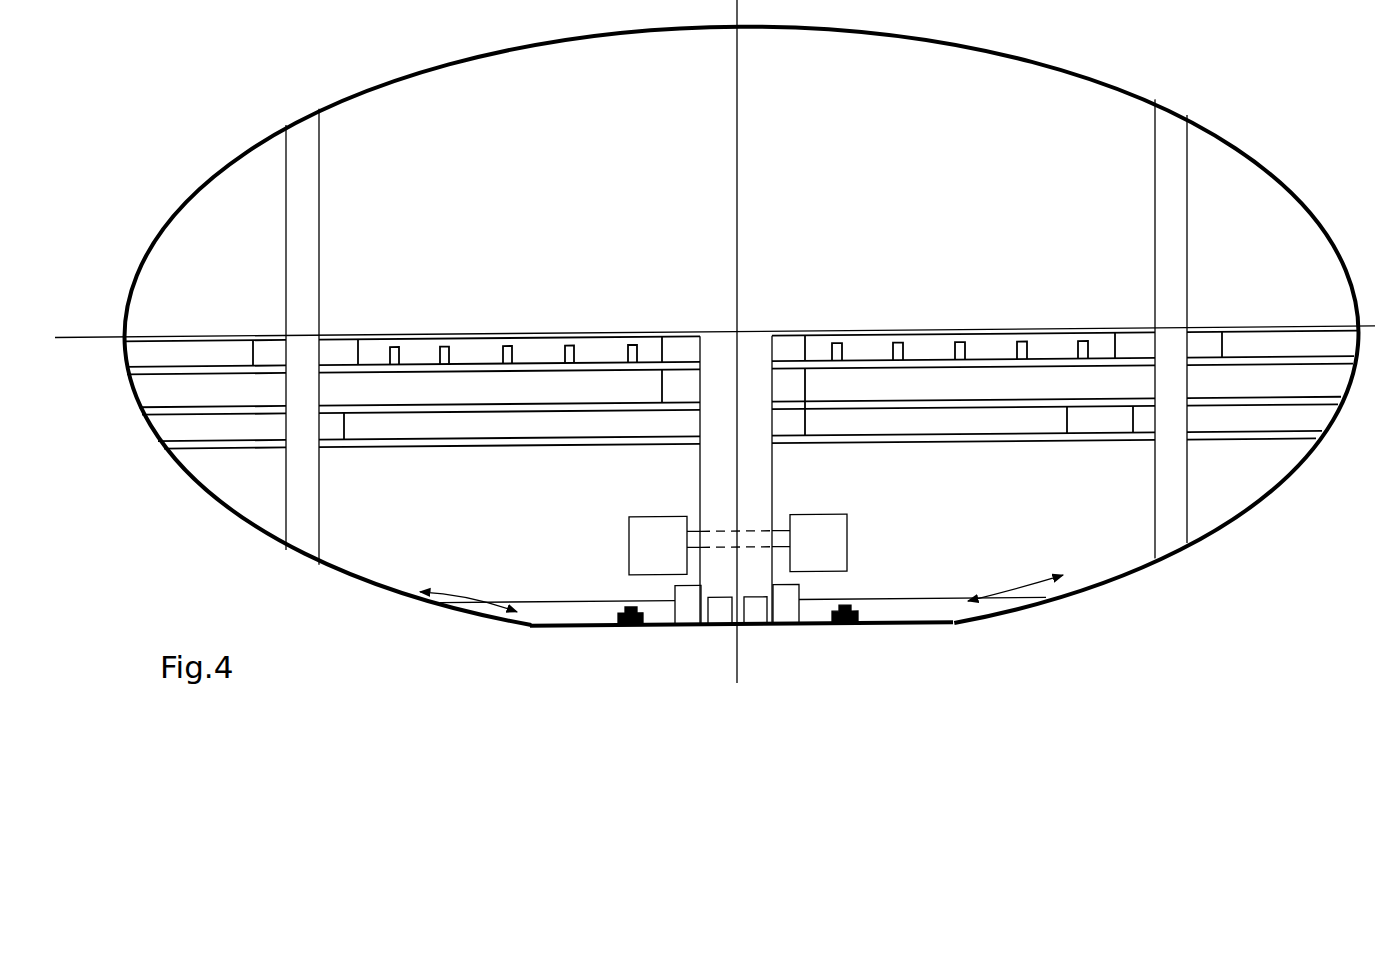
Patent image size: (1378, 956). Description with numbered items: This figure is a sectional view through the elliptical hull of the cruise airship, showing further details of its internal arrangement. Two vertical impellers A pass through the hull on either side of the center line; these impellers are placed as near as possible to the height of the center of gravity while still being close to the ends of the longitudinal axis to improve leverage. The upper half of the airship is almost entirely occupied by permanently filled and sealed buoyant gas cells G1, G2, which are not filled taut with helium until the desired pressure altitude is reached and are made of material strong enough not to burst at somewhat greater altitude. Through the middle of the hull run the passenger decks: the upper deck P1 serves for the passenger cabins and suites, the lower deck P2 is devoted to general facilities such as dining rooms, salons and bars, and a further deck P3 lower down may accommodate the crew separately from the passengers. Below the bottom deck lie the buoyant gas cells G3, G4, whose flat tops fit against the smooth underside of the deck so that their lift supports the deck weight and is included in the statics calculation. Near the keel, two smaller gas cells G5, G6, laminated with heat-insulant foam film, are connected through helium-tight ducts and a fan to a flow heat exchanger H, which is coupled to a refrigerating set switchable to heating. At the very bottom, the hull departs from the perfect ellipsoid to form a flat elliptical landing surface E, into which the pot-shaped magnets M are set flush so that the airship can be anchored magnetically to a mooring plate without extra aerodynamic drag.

The impellers A is at (308, 169).
The buoyant gas cell G1 is at (590, 179).
The buoyant gas cell G2 is at (970, 179).
The buoyant gas cell G3 is at (497, 520).
The buoyant gas cell G4 is at (1025, 517).
The gas cell G5 is at (644, 537).
The gas cell G6 is at (838, 541).
The flow heat exchanger H is at (812, 512).
The magnets M is at (632, 605).
The flat elliptical surface E is at (626, 625).
The upper passenger deck P1 is at (1264, 349).
The lower passenger deck P2 is at (1298, 375).
The further deck P3 is at (1255, 416).